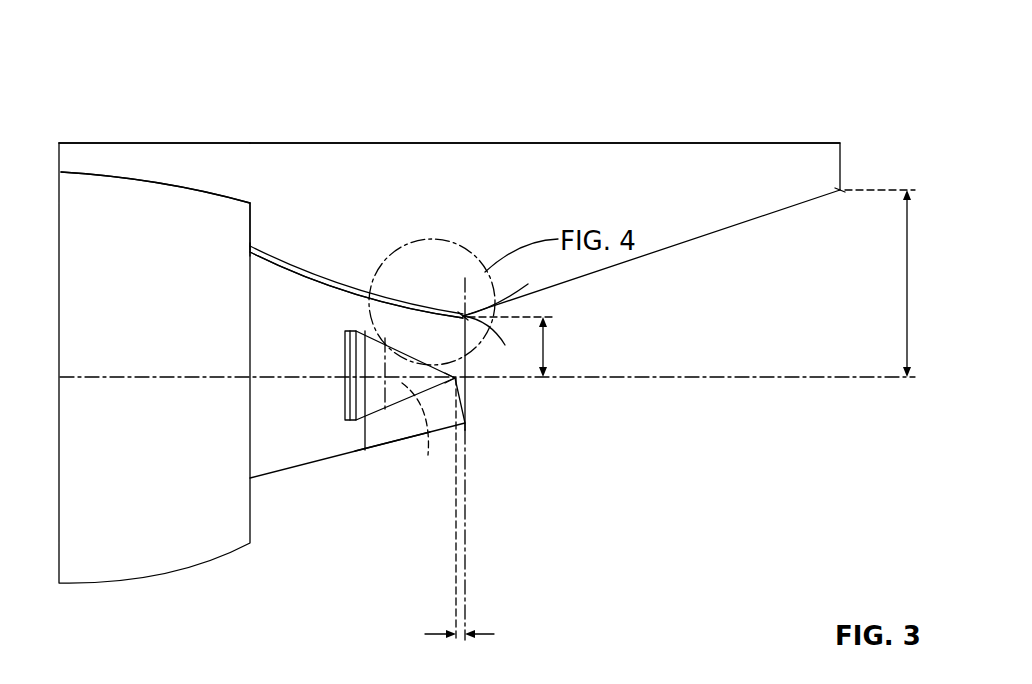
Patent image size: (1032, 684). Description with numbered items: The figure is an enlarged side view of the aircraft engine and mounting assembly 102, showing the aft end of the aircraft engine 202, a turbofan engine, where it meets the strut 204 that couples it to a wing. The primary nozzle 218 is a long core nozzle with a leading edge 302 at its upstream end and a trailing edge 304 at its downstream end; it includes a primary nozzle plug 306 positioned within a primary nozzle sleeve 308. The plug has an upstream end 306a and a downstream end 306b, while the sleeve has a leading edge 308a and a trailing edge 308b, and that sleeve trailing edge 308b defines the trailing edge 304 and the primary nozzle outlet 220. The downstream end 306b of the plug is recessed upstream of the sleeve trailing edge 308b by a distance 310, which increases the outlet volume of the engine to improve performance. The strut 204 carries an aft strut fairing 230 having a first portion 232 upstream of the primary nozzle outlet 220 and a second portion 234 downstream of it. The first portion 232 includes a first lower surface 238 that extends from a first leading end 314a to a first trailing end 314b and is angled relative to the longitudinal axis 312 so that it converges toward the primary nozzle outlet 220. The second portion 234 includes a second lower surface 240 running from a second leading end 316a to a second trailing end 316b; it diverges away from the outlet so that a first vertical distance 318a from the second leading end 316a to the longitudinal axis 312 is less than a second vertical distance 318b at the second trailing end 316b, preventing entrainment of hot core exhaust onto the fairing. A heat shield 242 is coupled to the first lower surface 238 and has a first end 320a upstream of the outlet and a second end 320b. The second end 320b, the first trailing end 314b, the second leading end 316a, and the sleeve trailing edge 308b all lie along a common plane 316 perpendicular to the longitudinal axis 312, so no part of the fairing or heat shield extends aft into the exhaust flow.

The aircraft engine and mounting assembly 102 is at (280, 47).
The aircraft engine 202 is at (131, 203).
The strut 204 is at (440, 92).
The primary nozzle 218 is at (388, 530).
The primary nozzle outlet 220 is at (468, 429).
The aft strut fairing 230 is at (215, 146).
The first portion 232 is at (238, 170).
The second portion 234 is at (548, 162).
The first lower surface 238 is at (356, 298).
The second lower surface 240 is at (704, 239).
The heat shield 242 is at (352, 288).
The leading edge 302 is at (357, 473).
The trailing edge 304 is at (549, 435).
The primary nozzle plug 306 is at (428, 433).
The upstream end 306a is at (345, 392).
The downstream end 306b is at (467, 380).
The primary nozzle sleeve 308 is at (393, 447).
The leading edge 308a is at (383, 448).
The trailing edge 308b is at (467, 433).
The distance 310 is at (438, 636).
The longitudinal axis 312 is at (785, 376).
The first leading end 314a is at (265, 210).
The first trailing end 314b is at (530, 276).
The plane 316 is at (468, 533).
The second leading end 316a is at (494, 329).
The second trailing end 316b is at (840, 191).
The first vertical distance 318a is at (547, 344).
The second vertical distance 318b is at (907, 289).
The first end 320a is at (250, 249).
The second end 320b is at (463, 316).